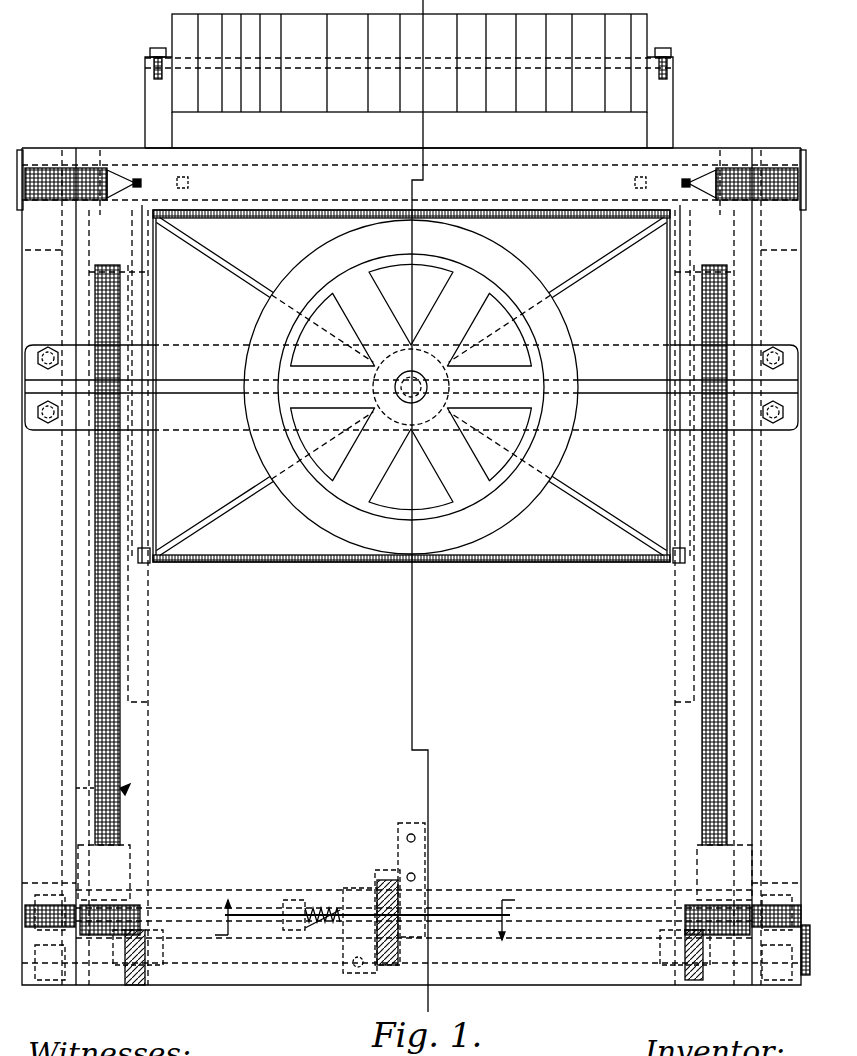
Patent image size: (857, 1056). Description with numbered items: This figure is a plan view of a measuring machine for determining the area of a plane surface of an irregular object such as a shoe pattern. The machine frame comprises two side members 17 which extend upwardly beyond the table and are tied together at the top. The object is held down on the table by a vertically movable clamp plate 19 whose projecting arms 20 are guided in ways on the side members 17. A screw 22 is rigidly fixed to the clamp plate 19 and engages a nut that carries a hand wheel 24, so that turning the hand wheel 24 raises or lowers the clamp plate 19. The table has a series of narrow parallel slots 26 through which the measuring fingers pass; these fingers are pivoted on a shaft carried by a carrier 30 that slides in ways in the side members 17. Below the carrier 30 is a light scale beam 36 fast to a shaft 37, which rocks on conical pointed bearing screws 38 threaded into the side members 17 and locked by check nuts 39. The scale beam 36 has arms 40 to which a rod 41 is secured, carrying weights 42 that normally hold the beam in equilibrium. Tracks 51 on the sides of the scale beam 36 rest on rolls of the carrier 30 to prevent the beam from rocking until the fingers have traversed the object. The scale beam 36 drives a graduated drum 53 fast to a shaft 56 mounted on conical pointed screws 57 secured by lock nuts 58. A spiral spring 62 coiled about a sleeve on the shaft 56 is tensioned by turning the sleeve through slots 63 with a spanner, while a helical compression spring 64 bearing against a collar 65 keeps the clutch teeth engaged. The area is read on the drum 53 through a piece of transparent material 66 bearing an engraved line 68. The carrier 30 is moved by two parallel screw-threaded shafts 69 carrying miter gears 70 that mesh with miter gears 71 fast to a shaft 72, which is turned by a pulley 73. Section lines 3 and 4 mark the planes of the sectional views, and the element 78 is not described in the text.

The section line 3— 3 is at (412, 5).
The section line 4— 4 is at (365, 920).
The side members 17 is at (411, 566).
The clamp plate 19 is at (336, 545).
The projecting arms 20 is at (665, 345).
The screw 22 is at (405, 397).
The hand wheel 24 is at (528, 276).
The slots 26 is at (258, 563).
The carrier 30 is at (128, 265).
The scale beam 36 is at (148, 760).
The shaft 37 is at (683, 168).
The bearing screws 38 is at (108, 168).
The check nuts 39 is at (24, 150).
The arms 40 is at (150, 100).
The rod 41 is at (673, 62).
The weights 42 is at (642, 40).
The tracks 51 is at (148, 698).
The drum 53 is at (395, 870).
The shaft 56 is at (250, 913).
The conical pointed screws 57 is at (45, 883).
The lock nuts 58 is at (38, 985).
The spiral spring 62 is at (352, 890).
The slots 63 is at (325, 922).
The helical compression spring 64 is at (312, 905).
The collar 65 is at (290, 932).
The transparent material 66 is at (380, 940).
The line 68 is at (400, 905).
The screw-threaded shafts 69 is at (120, 640).
The miter gears 70 is at (138, 915).
The miter gears 71 is at (135, 985).
The shaft 72 is at (560, 985).
The pulley 73 is at (805, 975).
The diagonal brace 78 is at (215, 420).